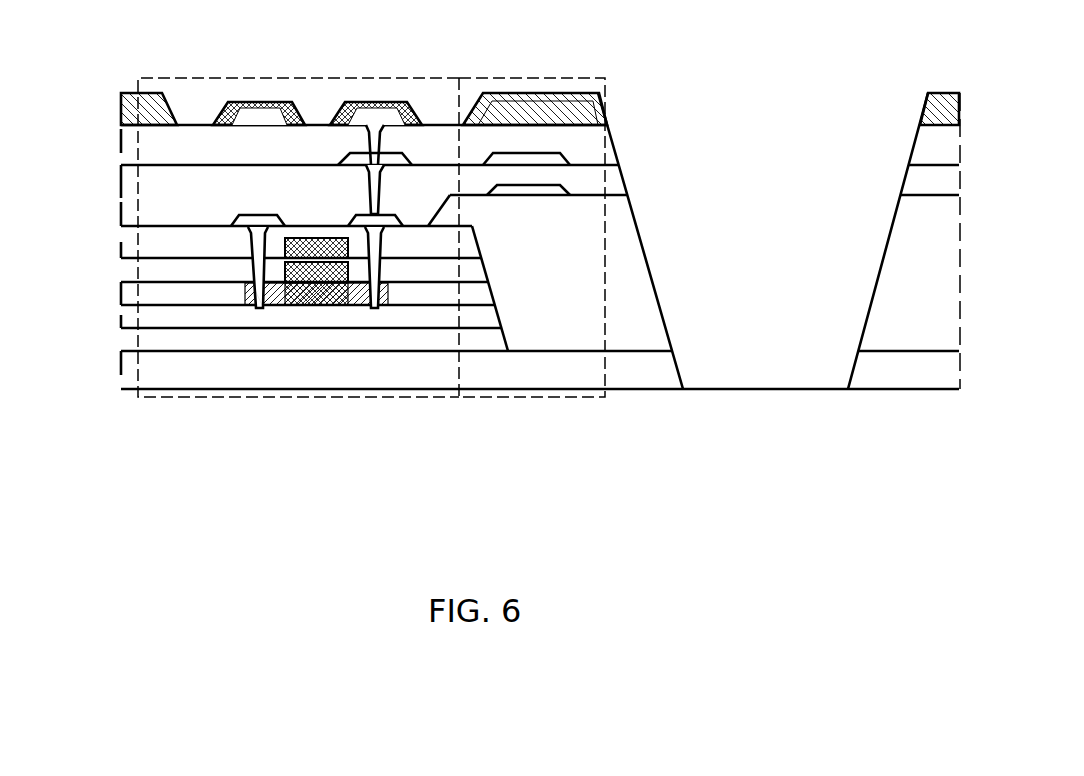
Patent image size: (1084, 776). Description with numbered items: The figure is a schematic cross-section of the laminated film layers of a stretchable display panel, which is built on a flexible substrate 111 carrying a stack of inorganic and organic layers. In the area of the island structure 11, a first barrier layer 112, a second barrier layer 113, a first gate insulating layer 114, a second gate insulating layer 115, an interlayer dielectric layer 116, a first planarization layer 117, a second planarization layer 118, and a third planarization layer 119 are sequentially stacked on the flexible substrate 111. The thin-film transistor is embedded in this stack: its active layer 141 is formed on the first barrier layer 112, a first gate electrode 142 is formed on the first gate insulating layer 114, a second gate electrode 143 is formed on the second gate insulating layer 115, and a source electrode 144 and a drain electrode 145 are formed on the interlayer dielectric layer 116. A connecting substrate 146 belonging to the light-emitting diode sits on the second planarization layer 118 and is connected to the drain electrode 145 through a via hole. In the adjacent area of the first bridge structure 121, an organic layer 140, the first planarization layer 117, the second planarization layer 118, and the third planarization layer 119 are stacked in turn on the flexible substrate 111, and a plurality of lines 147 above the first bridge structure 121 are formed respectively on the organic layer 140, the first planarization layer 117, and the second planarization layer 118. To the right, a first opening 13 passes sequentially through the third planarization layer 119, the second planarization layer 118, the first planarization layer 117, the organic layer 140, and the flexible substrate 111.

The island structure 11 is at (254, 78).
The first opening 13 is at (740, 347).
The flexible substrate 111 is at (133, 372).
The first barrier layer 112 is at (133, 340).
The second barrier layer 113 is at (133, 317).
The first gate insulating layer 114 is at (133, 295).
The second gate insulating layer 115 is at (133, 271).
The interlayer dielectric layer 116 is at (133, 242).
The first planarization layer 117 is at (133, 200).
The second planarization layer 118 is at (133, 153).
The third planarization layer 119 is at (121, 108).
The first bridge structure 121 is at (564, 78).
The organic layer 140 is at (565, 335).
The active layer 141 is at (252, 294).
The first gate electrode 142 is at (335, 248).
The second gate electrode 143 is at (328, 265).
The source electrode 144 is at (246, 224).
The drain electrode 145 is at (386, 228).
The connecting substrate 146 is at (385, 108).
The lines 147 is at (548, 190).